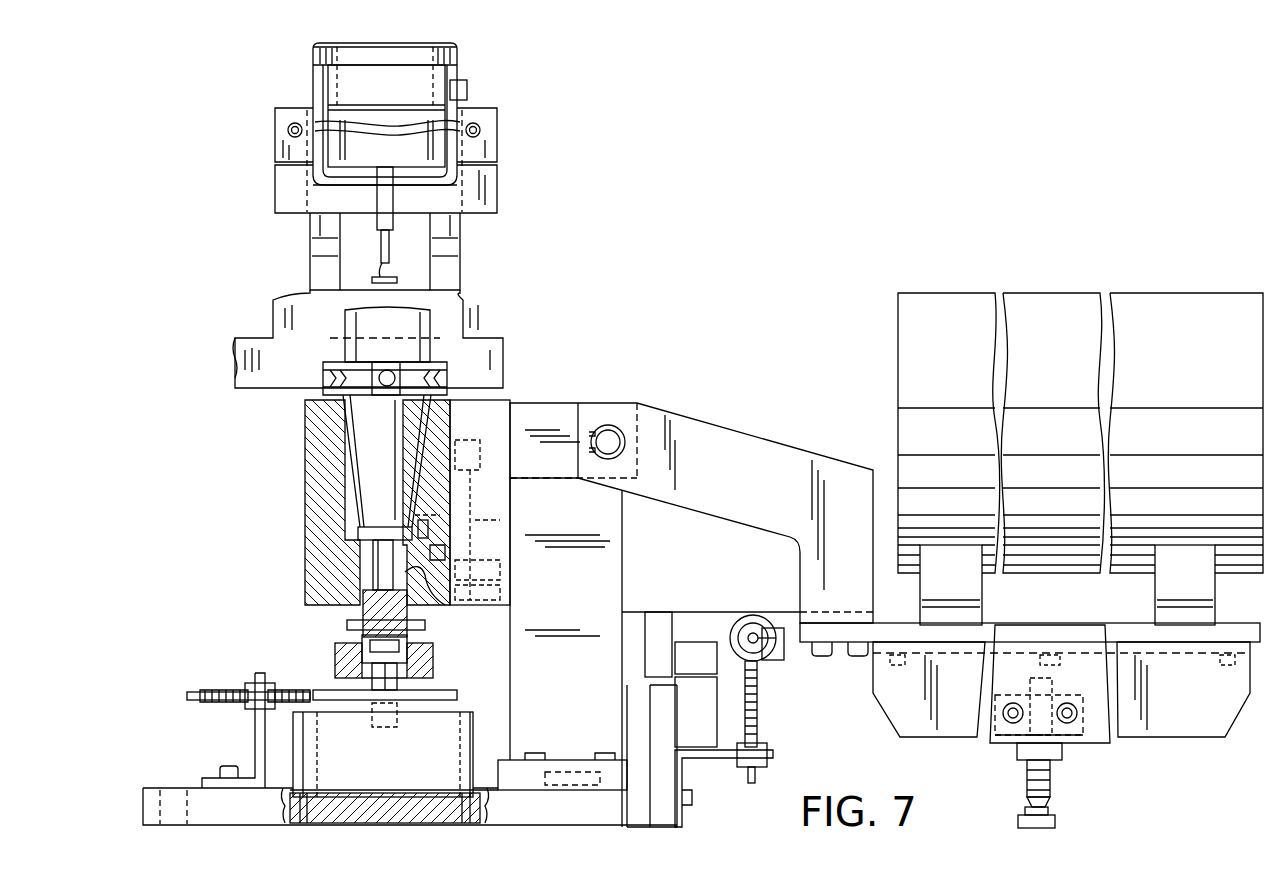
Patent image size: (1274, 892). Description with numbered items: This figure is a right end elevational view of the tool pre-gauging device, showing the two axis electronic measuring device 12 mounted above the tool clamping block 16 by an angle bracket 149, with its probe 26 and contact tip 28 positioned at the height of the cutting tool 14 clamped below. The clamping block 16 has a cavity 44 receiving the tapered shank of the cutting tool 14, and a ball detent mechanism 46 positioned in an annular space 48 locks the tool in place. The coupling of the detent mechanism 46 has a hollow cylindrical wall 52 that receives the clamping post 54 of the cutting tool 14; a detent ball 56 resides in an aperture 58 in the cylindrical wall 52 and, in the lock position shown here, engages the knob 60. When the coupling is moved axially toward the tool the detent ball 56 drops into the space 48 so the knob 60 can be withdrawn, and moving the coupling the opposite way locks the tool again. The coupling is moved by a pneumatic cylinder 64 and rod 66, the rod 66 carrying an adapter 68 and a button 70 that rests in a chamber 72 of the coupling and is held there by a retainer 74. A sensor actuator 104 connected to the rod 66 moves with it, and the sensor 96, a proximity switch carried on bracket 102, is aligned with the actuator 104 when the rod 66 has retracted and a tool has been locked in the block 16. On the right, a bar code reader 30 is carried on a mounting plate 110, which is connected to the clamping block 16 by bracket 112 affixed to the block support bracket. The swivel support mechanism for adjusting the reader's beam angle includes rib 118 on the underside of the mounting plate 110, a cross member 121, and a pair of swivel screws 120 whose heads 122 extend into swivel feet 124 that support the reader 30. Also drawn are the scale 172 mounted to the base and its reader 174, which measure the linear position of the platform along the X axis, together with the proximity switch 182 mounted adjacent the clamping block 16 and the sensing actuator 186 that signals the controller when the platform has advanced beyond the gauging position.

The electronic measuring device 12 is at (430, 117).
The angle bracket 149 is at (480, 152).
The probe 26 is at (388, 243).
The contact tip 28 is at (397, 278).
The cutting tool 14 is at (417, 330).
The tool clamping block 16 is at (438, 420).
The cavity 44 is at (355, 443).
The annular space 48 is at (357, 538).
The clamping post 54 is at (410, 508).
The hollow cylindrical wall 52 is at (403, 547).
The aperture 58 is at (430, 550).
The ball detent mechanism 46 is at (362, 573).
The knob 60 is at (373, 588).
The detent ball 56 is at (425, 613).
The chamber 72 is at (418, 645).
The retainer 74 is at (430, 672).
The button 70 is at (375, 660).
The adapter 68 is at (395, 690).
The sensor actuator 104 is at (320, 690).
The sensor 96 is at (222, 688).
The bracket 102 is at (258, 742).
The rod 66 is at (370, 718).
The cylinder 64 is at (428, 772).
The bracket 112 is at (723, 433).
The reader 174 is at (687, 650).
The scale 172 is at (700, 737).
The sensing actuator 186 is at (753, 627).
The proximity switch 182 is at (760, 710).
The bar code reader 30 is at (938, 298).
The mounting plate 110 is at (1252, 627).
The rib 118 is at (1198, 730).
The cross member 121 is at (998, 743).
The swivel screw 120 is at (1040, 765).
The head 122 is at (1063, 803).
The swivel foot 124 is at (1053, 820).